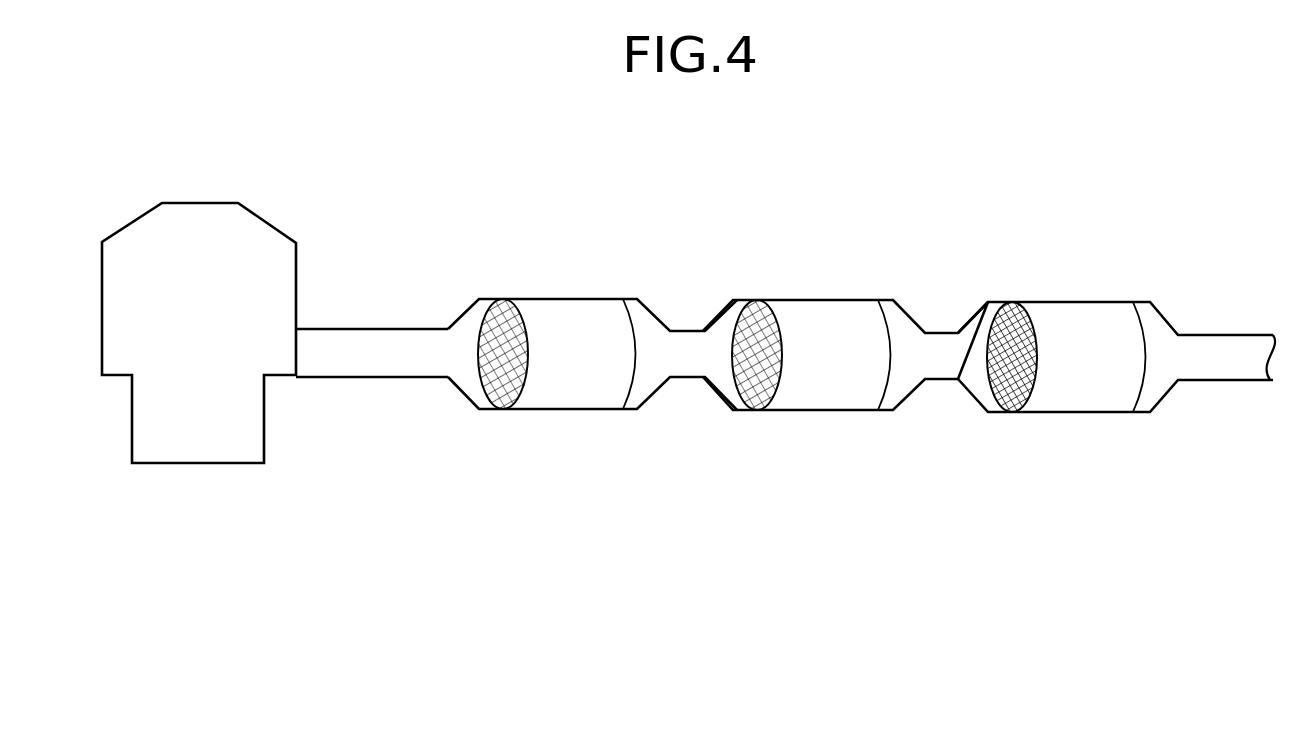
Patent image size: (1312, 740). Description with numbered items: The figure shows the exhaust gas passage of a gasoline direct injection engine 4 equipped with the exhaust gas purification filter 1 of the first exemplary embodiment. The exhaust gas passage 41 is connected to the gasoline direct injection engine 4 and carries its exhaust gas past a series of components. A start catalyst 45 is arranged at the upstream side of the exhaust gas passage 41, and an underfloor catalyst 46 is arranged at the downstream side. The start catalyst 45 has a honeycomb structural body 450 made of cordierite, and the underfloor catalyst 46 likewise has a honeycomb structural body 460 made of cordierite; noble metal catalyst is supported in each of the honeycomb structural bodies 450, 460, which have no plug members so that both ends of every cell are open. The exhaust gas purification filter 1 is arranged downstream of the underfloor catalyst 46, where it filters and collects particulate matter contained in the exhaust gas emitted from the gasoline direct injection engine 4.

The exhaust gas purification filter 1 is at (1094, 327).
The gasoline direct injection engine 4 is at (275, 228).
The exhaust gas passage 41 is at (433, 345).
The start catalyst (S/C) 45 is at (576, 328).
The honeycomb structural body 450 is at (592, 368).
The underfloor catalyst (UF/C) 46 is at (848, 332).
The honeycomb structural body 460 is at (845, 368).